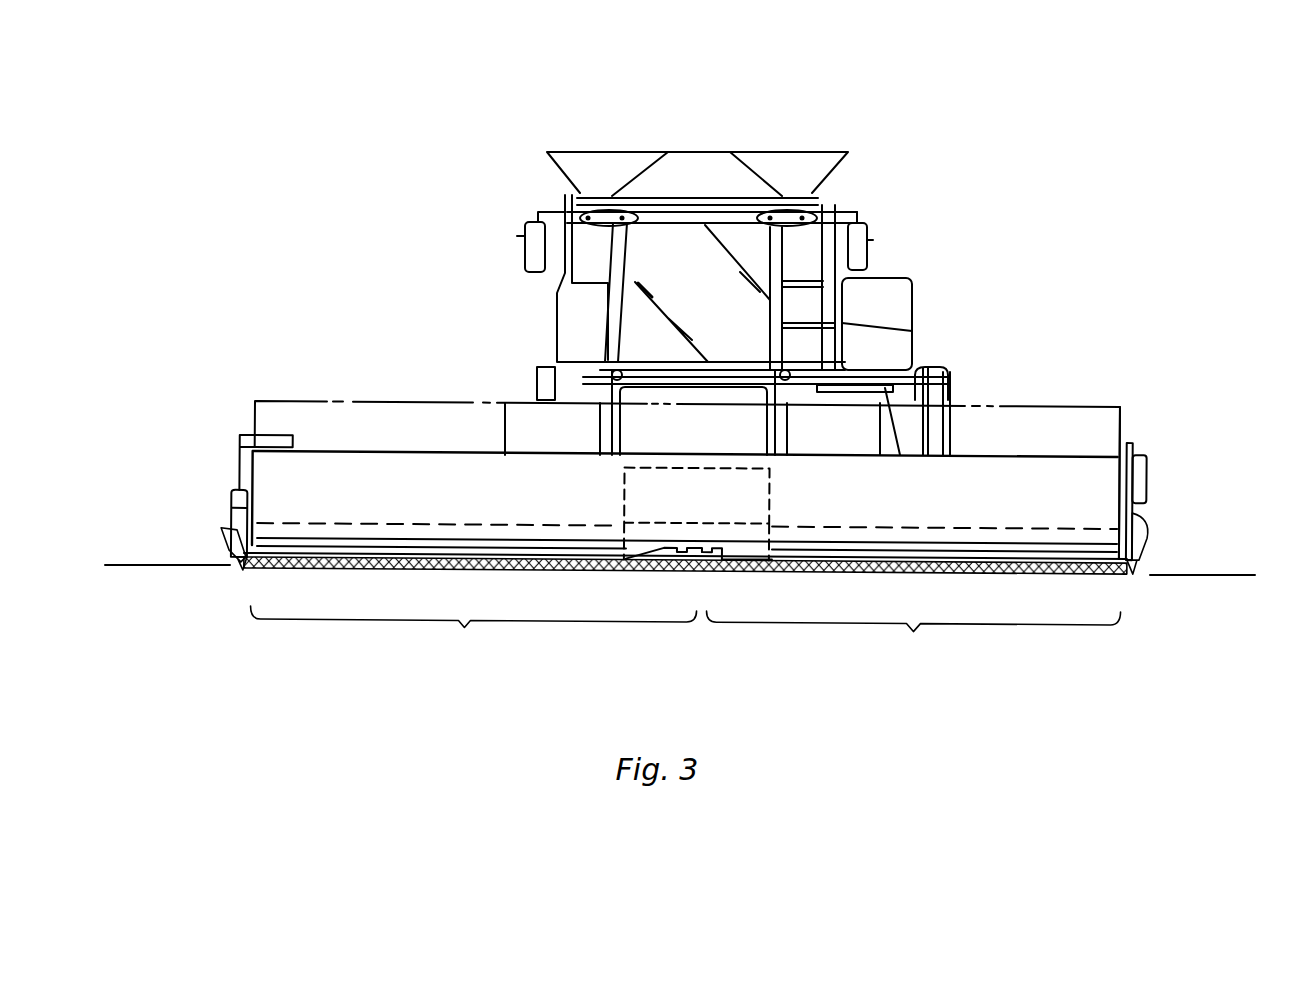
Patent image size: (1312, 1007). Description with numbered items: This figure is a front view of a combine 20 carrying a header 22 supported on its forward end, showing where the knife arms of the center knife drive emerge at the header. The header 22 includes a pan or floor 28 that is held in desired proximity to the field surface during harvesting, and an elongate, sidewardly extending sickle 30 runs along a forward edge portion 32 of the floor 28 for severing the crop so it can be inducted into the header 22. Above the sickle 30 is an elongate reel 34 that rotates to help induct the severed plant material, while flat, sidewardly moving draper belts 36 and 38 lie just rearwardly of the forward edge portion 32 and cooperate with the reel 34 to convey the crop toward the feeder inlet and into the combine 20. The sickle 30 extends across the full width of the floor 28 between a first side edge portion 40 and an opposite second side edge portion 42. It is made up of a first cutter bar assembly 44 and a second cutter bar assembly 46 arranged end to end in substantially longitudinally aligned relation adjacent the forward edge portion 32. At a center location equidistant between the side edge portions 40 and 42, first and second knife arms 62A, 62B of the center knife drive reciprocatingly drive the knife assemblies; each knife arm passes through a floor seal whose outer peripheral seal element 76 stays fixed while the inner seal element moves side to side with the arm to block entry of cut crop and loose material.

The combine 20 is at (1056, 106).
The header 22 is at (1142, 428).
The floor 28 is at (1073, 541).
The outer peripheral seal element 76 is at (687, 549).
The sickle 30 is at (1037, 571).
The forward edge portion 32 is at (567, 540).
The reel 34 is at (1063, 401).
The draper belt 36 is at (935, 523).
The draper belt 38 is at (420, 521).
The first side edge portion 40 is at (236, 562).
The second side edge portion 42 is at (1134, 565).
The first cutter bar assembly 44 is at (473, 633).
The second cutter bar assembly 46 is at (913, 638).
The first knife arm 62A is at (670, 575).
The second knife arm 62B is at (731, 578).